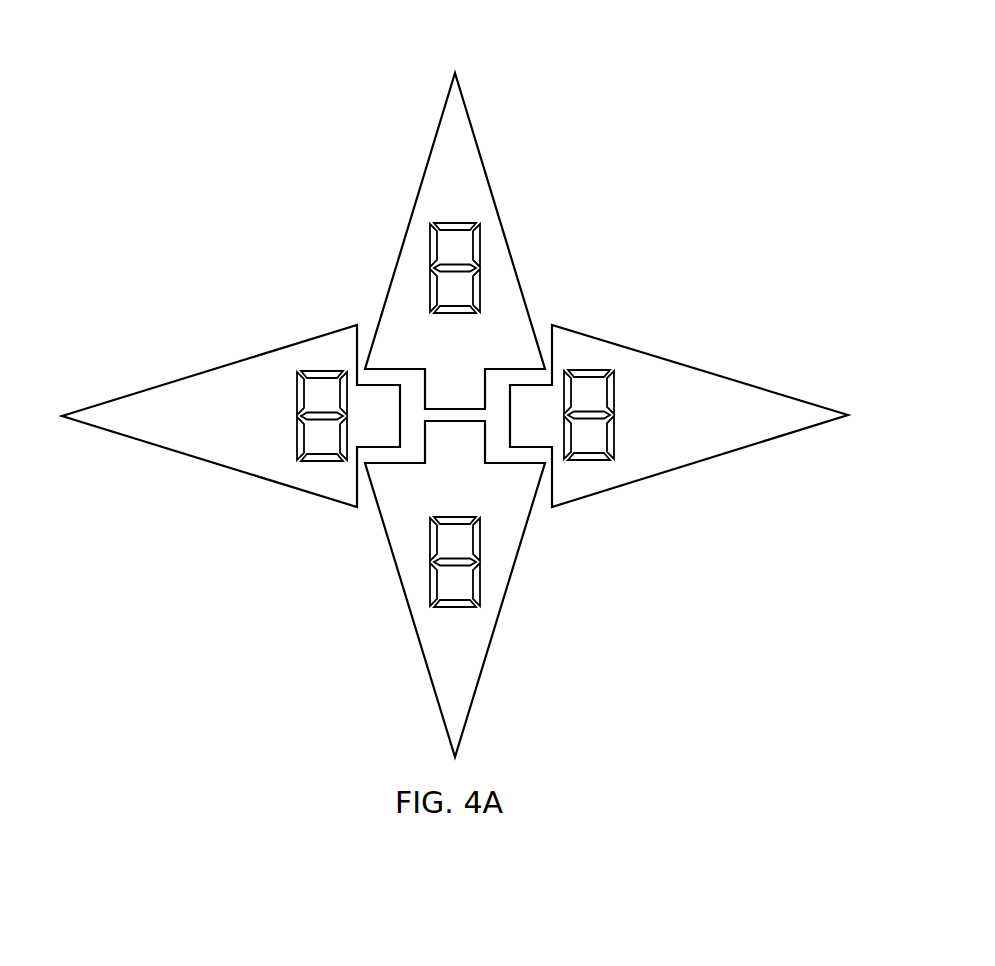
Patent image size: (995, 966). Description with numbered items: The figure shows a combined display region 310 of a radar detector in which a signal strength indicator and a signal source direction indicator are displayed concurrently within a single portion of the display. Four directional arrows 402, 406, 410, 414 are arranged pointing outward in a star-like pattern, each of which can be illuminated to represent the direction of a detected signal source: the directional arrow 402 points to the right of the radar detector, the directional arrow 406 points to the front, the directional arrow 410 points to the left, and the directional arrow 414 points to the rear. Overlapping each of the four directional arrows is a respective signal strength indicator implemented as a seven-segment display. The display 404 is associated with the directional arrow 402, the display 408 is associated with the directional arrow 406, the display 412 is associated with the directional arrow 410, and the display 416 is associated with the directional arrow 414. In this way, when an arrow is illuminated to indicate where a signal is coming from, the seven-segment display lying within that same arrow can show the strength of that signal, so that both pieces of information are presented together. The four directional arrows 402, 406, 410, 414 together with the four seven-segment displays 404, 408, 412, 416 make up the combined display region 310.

The combined display region 310 is at (455, 390).
The directional arrow 402 is at (737, 380).
The 7-segment display 404 is at (614, 428).
The directional arrow 406 is at (500, 218).
The 7-segment display 408 is at (455, 224).
The directional arrow 410 is at (160, 386).
The 7-segment display 412 is at (297, 430).
The directional arrow 414 is at (500, 622).
The 7-segment display 416 is at (460, 609).